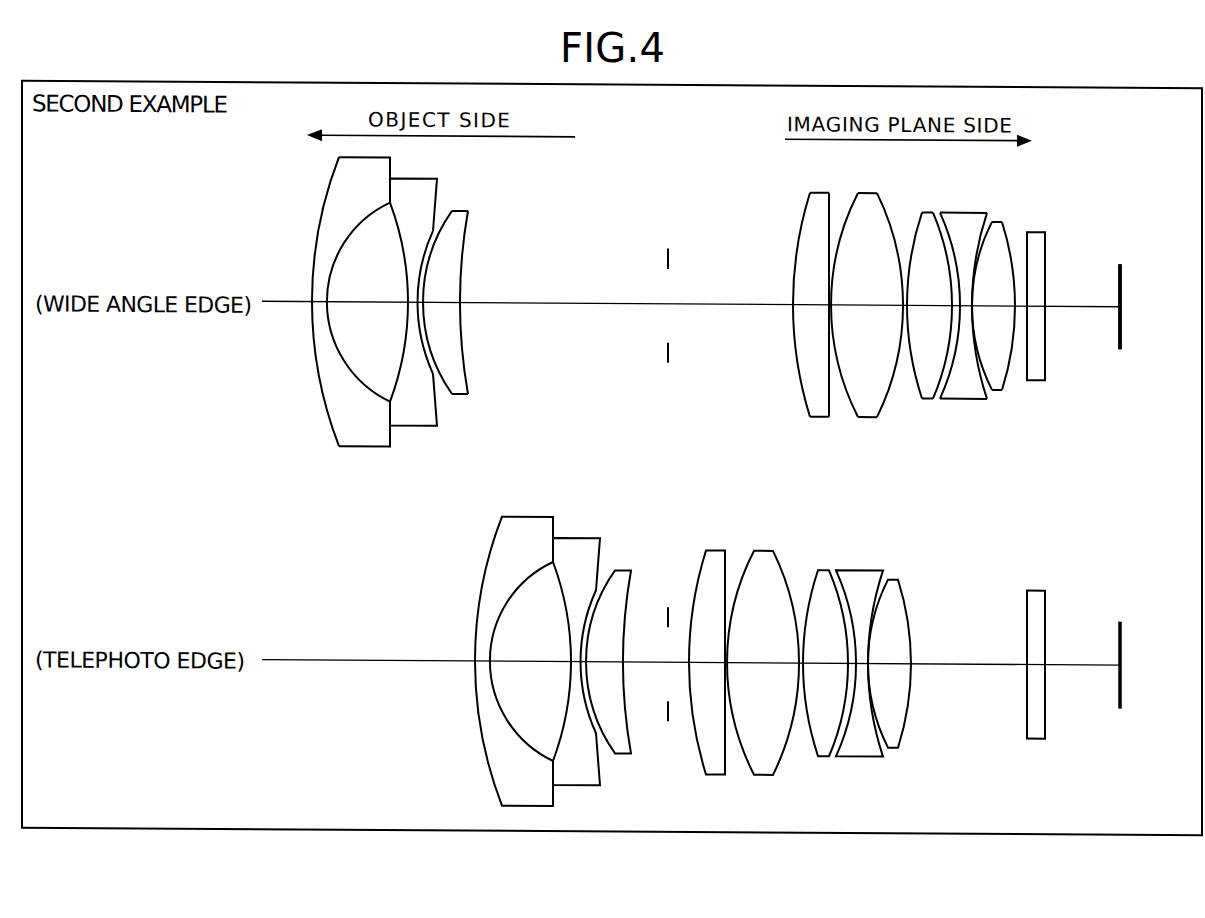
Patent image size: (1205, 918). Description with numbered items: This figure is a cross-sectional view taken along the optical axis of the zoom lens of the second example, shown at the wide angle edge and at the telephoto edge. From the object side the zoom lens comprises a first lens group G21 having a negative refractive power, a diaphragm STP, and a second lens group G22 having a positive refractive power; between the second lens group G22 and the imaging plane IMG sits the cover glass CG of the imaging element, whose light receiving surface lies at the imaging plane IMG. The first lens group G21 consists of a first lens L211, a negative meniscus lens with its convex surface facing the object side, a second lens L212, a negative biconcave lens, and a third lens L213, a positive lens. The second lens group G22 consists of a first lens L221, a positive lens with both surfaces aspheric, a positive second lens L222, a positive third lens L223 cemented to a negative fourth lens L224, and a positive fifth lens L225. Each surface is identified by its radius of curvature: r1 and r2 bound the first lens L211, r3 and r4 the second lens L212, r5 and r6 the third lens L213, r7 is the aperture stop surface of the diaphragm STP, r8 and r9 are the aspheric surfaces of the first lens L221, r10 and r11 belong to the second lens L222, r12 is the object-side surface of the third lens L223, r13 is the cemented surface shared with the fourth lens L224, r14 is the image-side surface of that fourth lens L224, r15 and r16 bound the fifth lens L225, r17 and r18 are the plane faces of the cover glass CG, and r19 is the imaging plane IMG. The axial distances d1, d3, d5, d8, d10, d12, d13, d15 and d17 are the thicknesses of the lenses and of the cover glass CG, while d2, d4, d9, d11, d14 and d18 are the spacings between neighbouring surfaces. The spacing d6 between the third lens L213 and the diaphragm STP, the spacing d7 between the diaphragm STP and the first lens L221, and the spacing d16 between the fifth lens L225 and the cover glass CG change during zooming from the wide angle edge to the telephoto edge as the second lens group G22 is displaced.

The radius of curvature of object-side surface of first lens of first lens group r1 is at (314, 250).
The radius of curvature of image-side surface of first lens of first lens group r2 is at (357, 230).
The radius of curvature of object-side surface of second lens of first lens group r3 is at (394, 218).
The radius of curvature of image-side surface of second lens of first lens group r4 is at (432, 229).
The radius of curvature of object-side surface of third lens of first lens group r5 is at (434, 244).
The radius of curvature of image-side surface of third lens of first lens group r6 is at (462, 275).
The aperture stop surface r7 is at (667, 255).
The radius of curvature of object-side aspheric surface of first lens of second lens r8 is at (800, 237).
The radius of curvature of image-side aspheric surface of first lens of second lens r9 is at (828, 217).
The radius of curvature of object-side surface of second lens of second lens group r10 is at (852, 207).
The radius of curvature of image-side surface of second lens of second lens group r11 is at (884, 211).
The radius of curvature of object-side surface of third lens of second lens group r12 is at (917, 221).
The radius of curvature of cemented surface between third and fourth lenses of secon r13 is at (941, 228).
The radius of curvature of image-side surface of fourth lens of second lens group r14 is at (978, 231).
The radius of curvature of object-side surface of fifth lens of second lens group r15 is at (996, 218).
The radius of curvature of image-side surface of fifth lens of second lens group r16 is at (1008, 227).
The radius of curvature of object-side surface of cover glass r17 is at (1024, 227).
The radius of curvature of image-side surface of cover glass r18 is at (1047, 276).
The imaging plane surface r19 is at (1115, 259).
The thickness of first lens of first lens group d1 is at (318, 306).
The distance between first lens and second lens of first lens group d2 is at (367, 305).
The thickness of second lens of first lens group d3 is at (413, 306).
The distance between second lens and third lens of first lens group d4 is at (421, 306).
The thickness of third lens of first lens group d5 is at (442, 306).
The distance between first lens group and aperture stop d6 is at (573, 306).
The distance between aperture stop and second lens group d7 is at (710, 306).
The thickness of first lens of second lens group d8 is at (808, 304).
The distance between first lens and second lens of second lens group d9 is at (829, 304).
The thickness of second lens of second lens group d10 is at (865, 304).
The distance between second lens and third lens of second lens group d11 is at (905, 304).
The thickness of third lens of second lens group d12 is at (930, 304).
The thickness of fourth lens of second lens group d13 is at (955, 304).
The distance between fourth lens and fifth lens of second lens group d14 is at (966, 304).
The thickness of fifth lens of second lens group d15 is at (1003, 304).
The distance between second lens group and cover glass d16 is at (1022, 304).
The thickness of cover glass d17 is at (1037, 304).
The distance between cover glass and imaging plane d18 is at (1097, 304).
The first lens of first lens group L211 is at (330, 324).
The second lens of first lens group L212 is at (373, 317).
The third lens of first lens group L213 is at (466, 350).
The first lens of second lens group L221 is at (791, 339).
The second lens of second lens group L222 is at (864, 322).
The third lens of second lens group L223 is at (924, 334).
The fourth lens of second lens group L224 is at (975, 320).
The fifth lens of second lens group L225 is at (1009, 320).
The first lens group G21 is at (389, 343).
The second lens group G22 is at (906, 349).
The diaphragm STP is at (663, 286).
The cover glass CG is at (1065, 286).
The imaging plane IMG is at (1151, 290).